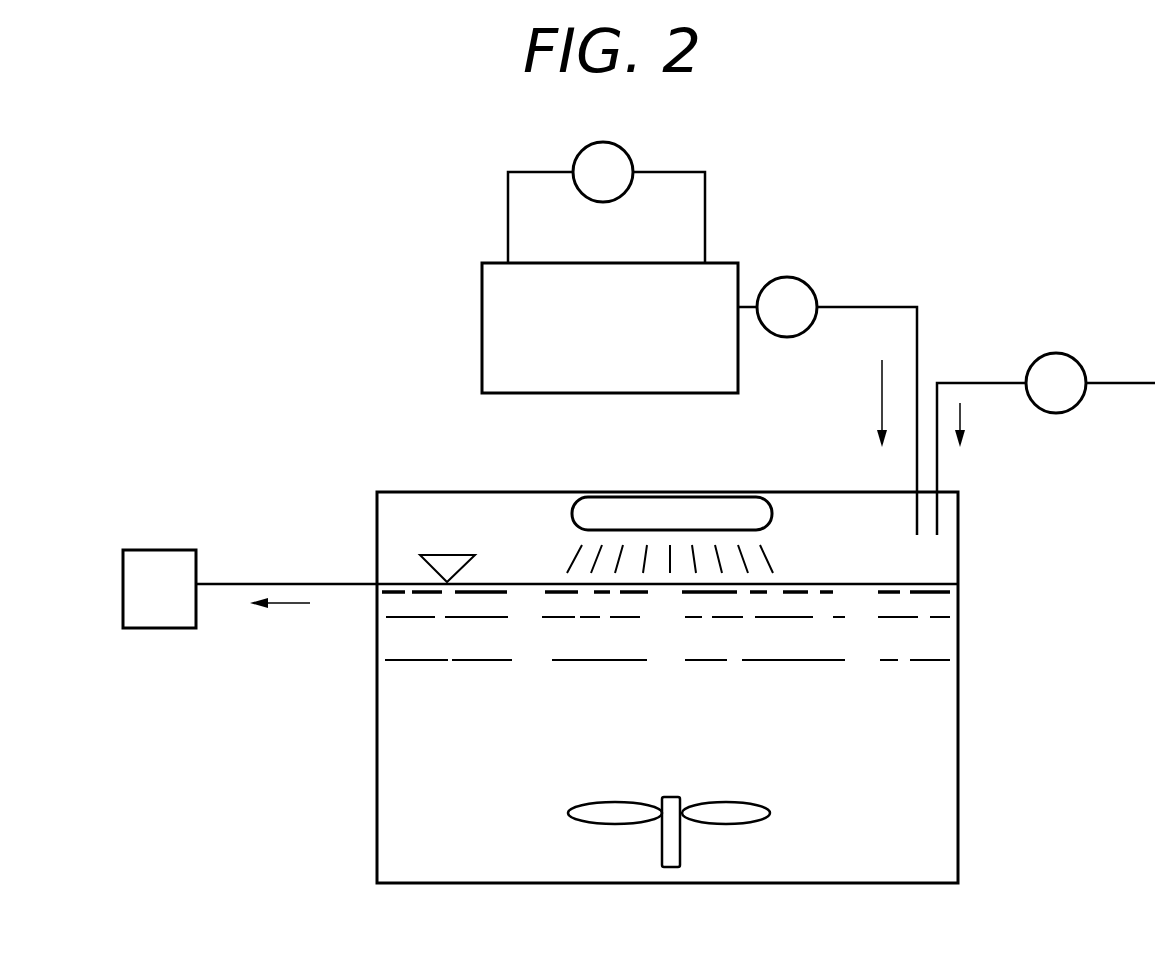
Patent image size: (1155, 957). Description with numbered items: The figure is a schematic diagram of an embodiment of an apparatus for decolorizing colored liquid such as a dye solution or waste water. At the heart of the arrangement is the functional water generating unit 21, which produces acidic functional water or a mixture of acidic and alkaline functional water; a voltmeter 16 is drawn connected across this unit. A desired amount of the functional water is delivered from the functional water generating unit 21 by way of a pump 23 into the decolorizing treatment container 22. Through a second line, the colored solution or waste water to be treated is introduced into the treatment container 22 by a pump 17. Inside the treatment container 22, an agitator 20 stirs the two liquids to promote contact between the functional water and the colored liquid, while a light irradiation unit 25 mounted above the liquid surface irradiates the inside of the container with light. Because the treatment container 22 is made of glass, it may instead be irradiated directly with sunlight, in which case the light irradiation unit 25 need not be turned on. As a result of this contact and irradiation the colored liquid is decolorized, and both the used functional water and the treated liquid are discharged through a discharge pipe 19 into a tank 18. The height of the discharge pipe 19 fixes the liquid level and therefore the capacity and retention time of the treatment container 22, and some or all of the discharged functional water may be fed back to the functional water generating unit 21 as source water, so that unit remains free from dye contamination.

The voltmeter 16 is at (630, 150).
The pump 17 is at (1074, 362).
The tank 18 is at (180, 550).
The discharge pipe 19 is at (320, 583).
The agitator 20 is at (770, 811).
The functional water generating unit 21 is at (482, 298).
The decolorizing treatment container 22 is at (959, 700).
The pump 23 is at (808, 286).
The light irradiation unit 25 is at (745, 497).